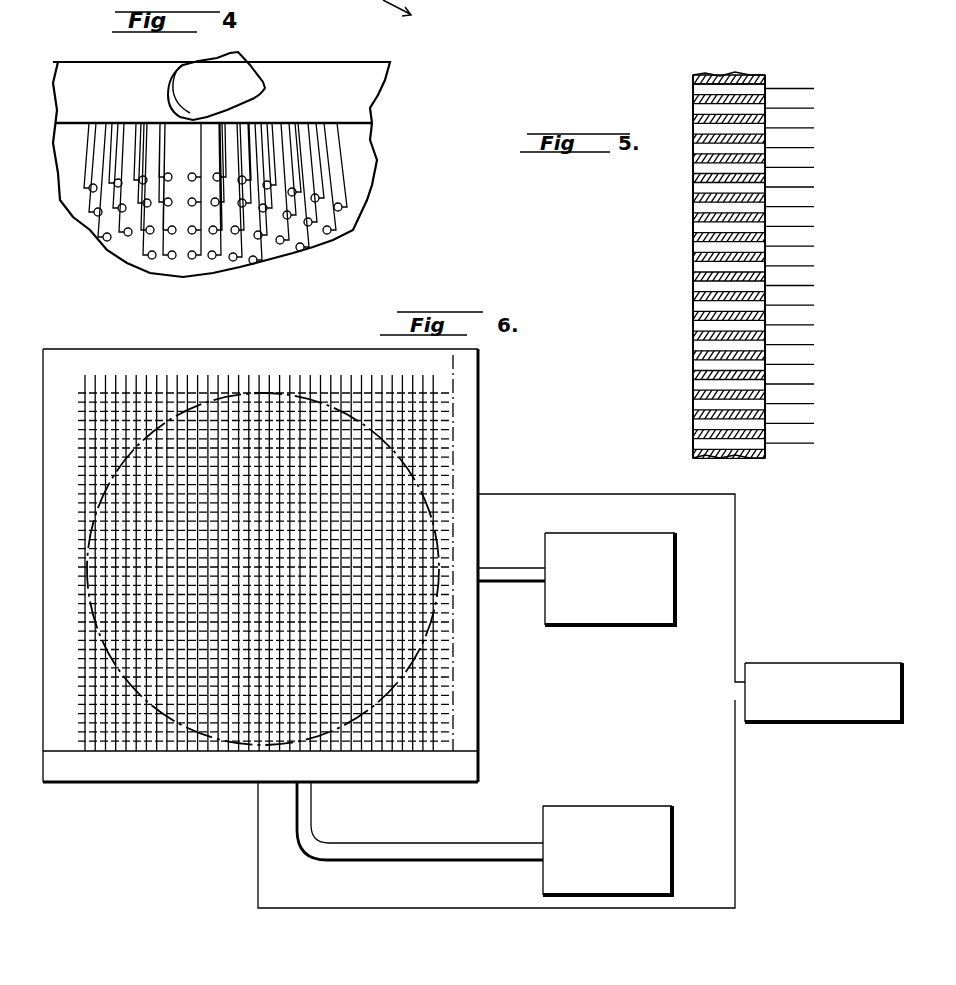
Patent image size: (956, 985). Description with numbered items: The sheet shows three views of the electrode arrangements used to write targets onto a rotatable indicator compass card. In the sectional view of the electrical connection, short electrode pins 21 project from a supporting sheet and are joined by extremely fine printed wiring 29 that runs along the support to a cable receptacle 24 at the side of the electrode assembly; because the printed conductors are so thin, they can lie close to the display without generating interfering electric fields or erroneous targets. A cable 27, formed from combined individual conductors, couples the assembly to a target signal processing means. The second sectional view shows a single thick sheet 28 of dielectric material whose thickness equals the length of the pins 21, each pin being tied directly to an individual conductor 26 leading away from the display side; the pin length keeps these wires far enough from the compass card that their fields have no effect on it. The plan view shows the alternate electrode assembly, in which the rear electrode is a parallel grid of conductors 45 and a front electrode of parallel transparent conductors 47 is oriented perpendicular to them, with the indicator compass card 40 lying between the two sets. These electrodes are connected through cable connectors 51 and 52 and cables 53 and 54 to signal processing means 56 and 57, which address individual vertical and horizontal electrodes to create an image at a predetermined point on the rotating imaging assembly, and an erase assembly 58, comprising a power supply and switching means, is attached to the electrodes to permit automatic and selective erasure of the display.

In FIG. 4, the electrode pins 21 is at (327, 230).
In FIG. 5, the electrode pins 21 is at (693, 84).
In FIG. 4, the cable receptacle 24 is at (333, 62).
In FIG. 5, the individual conductors 26 is at (799, 88).
In FIG. 4, the cables 27 is at (245, 62).
In FIG. 5, the thick sheet of dielectric material 28 is at (723, 73).
In FIG. 4, the printed wiring 29 is at (350, 163).
In FIG. 6, the indicator compass card 40 is at (330, 392).
In FIG. 6, the parallel grid of conductors 45 is at (88, 375).
In FIG. 6, the transparent conductors 47 is at (158, 378).
In FIG. 6, the cable connector 51 is at (156, 784).
In FIG. 6, the cable connector 52 is at (478, 370).
In FIG. 6, the cable 53 is at (385, 861).
In FIG. 6, the cable 54 is at (512, 585).
In FIG. 6, the signal processing means 56 is at (595, 864).
In FIG. 6, the signal processing means 57 is at (598, 594).
In FIG. 6, the erase assembly 58 is at (810, 711).